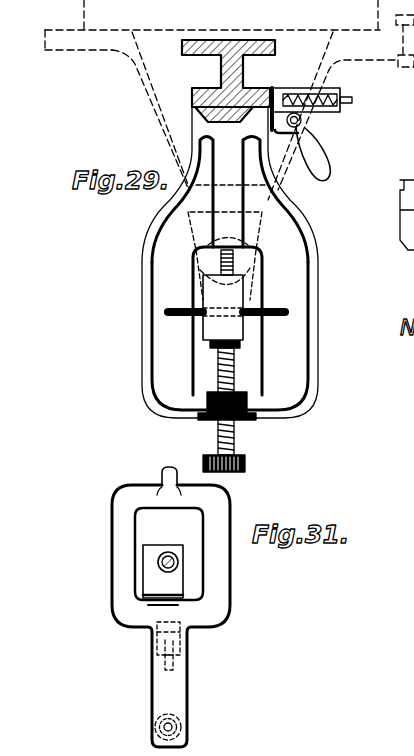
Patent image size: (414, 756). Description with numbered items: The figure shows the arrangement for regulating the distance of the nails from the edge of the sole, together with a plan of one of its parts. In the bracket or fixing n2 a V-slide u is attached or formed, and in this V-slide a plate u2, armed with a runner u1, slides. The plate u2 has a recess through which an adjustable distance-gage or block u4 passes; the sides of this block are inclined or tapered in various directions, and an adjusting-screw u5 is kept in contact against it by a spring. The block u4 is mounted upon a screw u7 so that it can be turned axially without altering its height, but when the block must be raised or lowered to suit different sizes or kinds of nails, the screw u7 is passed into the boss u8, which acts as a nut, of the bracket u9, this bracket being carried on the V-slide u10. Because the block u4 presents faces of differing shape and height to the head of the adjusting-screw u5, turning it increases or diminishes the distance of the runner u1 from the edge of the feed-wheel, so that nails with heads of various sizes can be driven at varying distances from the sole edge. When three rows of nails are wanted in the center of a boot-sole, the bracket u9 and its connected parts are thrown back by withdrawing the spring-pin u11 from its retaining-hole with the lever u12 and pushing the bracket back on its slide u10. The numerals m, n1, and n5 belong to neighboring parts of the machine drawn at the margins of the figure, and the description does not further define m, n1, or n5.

In FIG. 29, the V-slide u is at (220, 307).
In FIG. 31, the runner u1 is at (182, 725).
In FIG. 29, the plate u2 is at (171, 306).
In FIG. 31, the plate u2 is at (194, 675).
In FIG. 29, the adjustable distance-gage or block u4 is at (208, 330).
In FIG. 31, the adjustable distance-gage or block u4 is at (180, 538).
In FIG. 31, the adjusting-screw u5 is at (185, 635).
In FIG. 29, the screw u7 is at (235, 373).
In FIG. 29, the boss u8 is at (228, 196).
In FIG. 29, the bracket u9 is at (141, 264).
In FIG. 29, the V-slide u10 is at (247, 66).
In FIG. 29, the spring-pin u11 is at (353, 100).
In FIG. 29, the lever u12 is at (322, 156).
In FIG. 29, the frame m is at (55, 13).
In FIG. 29, the bracket n1 is at (402, 245).
In FIG. 29, the bracket or fixing n2 is at (72, 46).
In FIG. 29, the support n5 is at (401, 268).